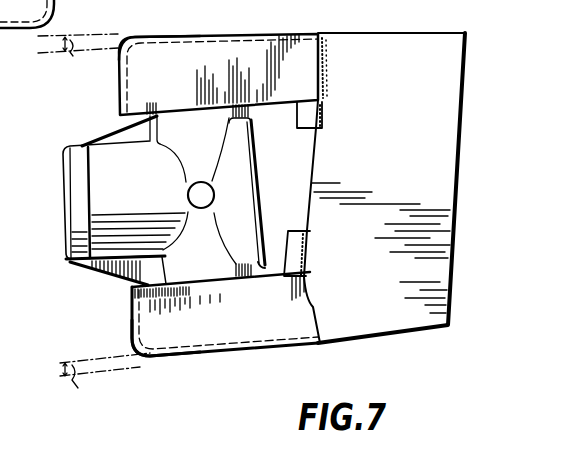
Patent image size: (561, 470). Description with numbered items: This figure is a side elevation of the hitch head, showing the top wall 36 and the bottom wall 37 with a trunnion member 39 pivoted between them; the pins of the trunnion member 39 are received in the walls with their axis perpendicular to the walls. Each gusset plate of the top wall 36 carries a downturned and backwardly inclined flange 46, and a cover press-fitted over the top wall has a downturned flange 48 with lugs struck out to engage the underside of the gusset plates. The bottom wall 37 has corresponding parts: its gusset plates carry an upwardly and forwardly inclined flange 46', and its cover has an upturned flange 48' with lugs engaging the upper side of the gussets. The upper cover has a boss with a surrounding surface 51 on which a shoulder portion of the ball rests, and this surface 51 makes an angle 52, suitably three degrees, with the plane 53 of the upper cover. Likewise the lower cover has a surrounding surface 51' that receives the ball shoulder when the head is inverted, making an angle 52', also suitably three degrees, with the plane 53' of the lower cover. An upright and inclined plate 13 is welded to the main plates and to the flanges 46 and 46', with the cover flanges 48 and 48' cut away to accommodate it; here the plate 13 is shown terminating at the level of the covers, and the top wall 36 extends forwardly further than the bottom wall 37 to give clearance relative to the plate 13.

The upright and inclined plate 13 is at (374, 38).
The top wall 36 is at (182, 63).
The bottom wall 37 is at (189, 338).
The trunnion member 39 is at (136, 190).
The downturned and backwardly inclined flange 46 is at (325, 119).
The upwardly and forwardly inclined flange 46' is at (317, 253).
The downturned flange 48 is at (248, 55).
The upturned flange 48' is at (227, 329).
The surrounding surface 51 is at (159, 32).
The surrounding surface 51' is at (166, 362).
The angle 52 is at (78, 59).
The angle 52' is at (105, 378).
The plane of cover 53 is at (222, 58).
The plane of cover 53' is at (228, 343).